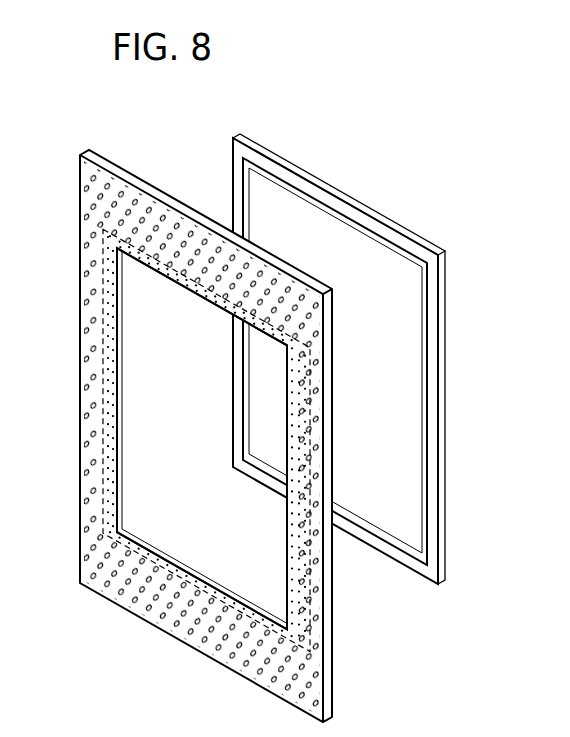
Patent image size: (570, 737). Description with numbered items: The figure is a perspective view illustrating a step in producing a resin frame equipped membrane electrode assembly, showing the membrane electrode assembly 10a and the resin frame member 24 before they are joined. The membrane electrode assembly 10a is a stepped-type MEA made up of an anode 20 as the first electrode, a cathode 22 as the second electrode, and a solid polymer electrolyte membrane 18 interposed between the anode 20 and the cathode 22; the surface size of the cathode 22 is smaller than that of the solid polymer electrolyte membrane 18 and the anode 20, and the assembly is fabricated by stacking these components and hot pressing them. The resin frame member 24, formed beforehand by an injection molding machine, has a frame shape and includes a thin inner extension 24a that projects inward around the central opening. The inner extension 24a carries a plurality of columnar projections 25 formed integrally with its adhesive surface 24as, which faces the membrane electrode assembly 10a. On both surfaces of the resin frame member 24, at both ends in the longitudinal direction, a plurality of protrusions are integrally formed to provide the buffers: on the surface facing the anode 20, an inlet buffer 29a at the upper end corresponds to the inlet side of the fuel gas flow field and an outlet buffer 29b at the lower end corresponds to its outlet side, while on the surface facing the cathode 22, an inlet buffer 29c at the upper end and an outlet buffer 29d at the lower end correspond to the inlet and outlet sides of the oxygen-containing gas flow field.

The membrane electrode assembly 10a is at (371, 332).
The solid polymer electrolyte membrane 18 is at (435, 313).
The anode 20 is at (447, 370).
The cathode 22 is at (393, 415).
The resin frame member 24 is at (178, 422).
The inner extension 24a is at (180, 286).
The adhesive surface 24as is at (120, 412).
The columnar projections 25 is at (287, 517).
The inlet buffer 29a is at (128, 190).
The outlet buffer 29b is at (143, 587).
The inlet buffer 29c is at (176, 230).
The outlet buffer 29d is at (198, 633).